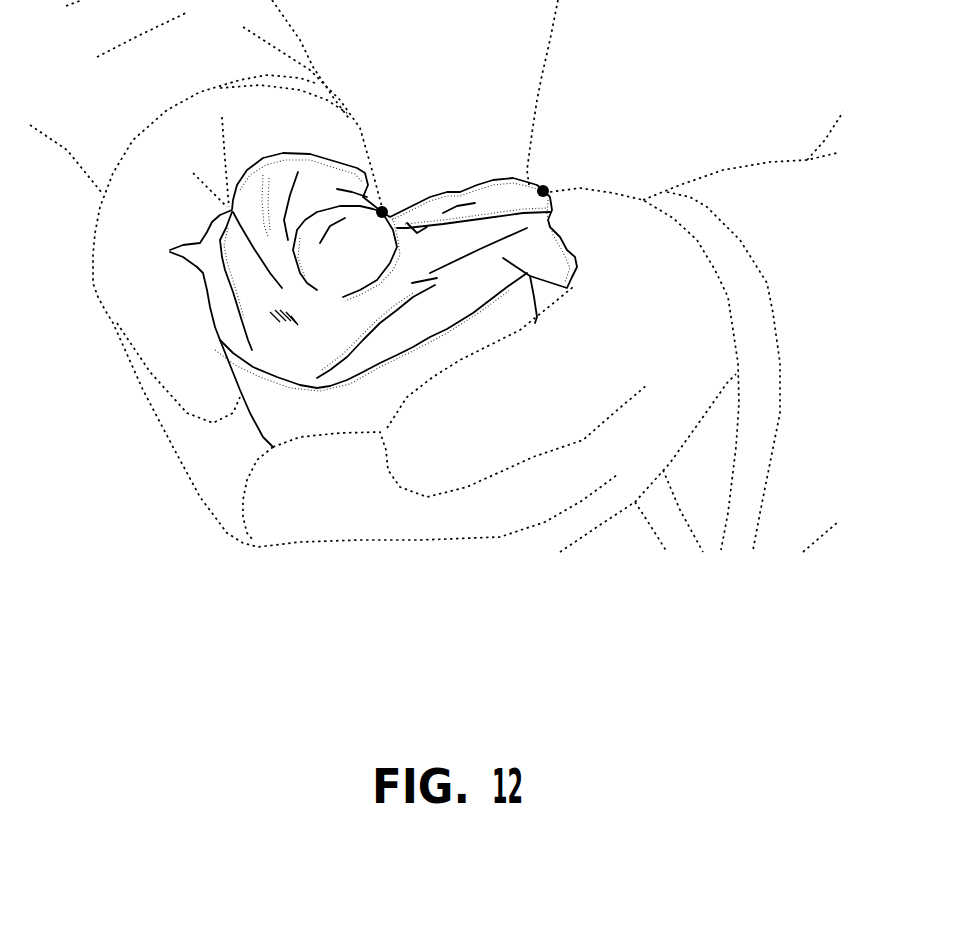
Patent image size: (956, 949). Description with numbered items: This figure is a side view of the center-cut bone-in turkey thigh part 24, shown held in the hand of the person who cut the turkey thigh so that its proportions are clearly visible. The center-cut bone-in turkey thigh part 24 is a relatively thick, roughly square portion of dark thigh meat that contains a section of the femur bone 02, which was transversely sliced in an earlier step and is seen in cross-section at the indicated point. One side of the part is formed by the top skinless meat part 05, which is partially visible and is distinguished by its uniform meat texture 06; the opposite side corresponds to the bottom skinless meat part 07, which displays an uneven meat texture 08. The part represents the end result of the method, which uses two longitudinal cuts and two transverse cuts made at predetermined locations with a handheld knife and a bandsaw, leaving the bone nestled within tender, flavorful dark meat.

The femur bone 02 is at (385, 208).
The top skinless meat part 05 is at (348, 300).
The uniform meat texture 06 is at (348, 300).
The bottom skinless meat part 07 is at (507, 219).
The uneven meat texture 08 is at (547, 187).
The center-cut bone-in turkey thigh part 24 is at (401, 281).